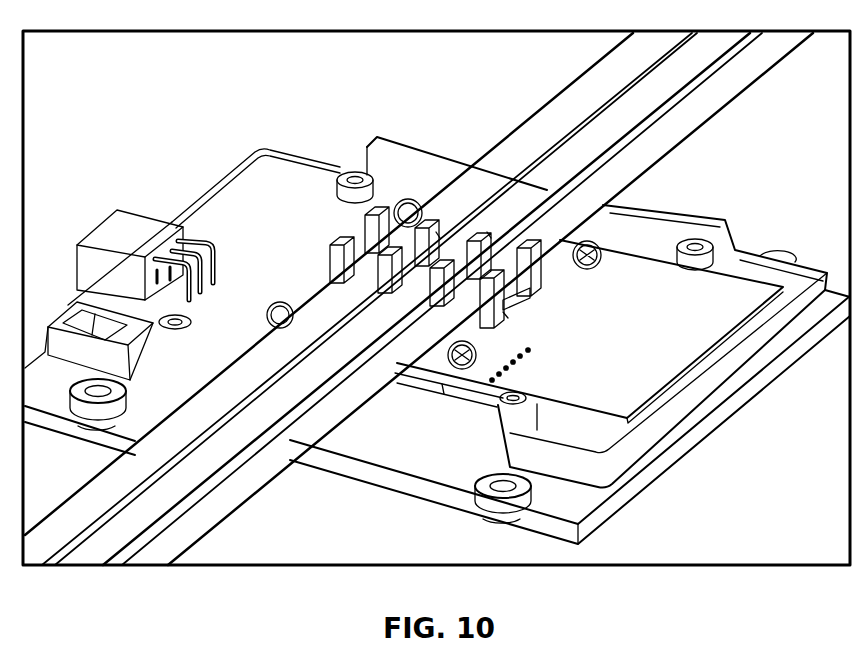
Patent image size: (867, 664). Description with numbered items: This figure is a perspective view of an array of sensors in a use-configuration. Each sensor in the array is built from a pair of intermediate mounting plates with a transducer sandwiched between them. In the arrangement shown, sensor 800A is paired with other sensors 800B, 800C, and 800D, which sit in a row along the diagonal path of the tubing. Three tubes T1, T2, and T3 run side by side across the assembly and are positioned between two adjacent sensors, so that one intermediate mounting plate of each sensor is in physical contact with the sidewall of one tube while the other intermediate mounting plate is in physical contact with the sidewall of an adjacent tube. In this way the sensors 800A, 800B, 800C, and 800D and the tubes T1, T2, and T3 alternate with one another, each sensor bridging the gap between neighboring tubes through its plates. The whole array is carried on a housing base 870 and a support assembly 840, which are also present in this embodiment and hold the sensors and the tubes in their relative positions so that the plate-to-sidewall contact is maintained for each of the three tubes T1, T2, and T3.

The sensor 800A is at (357, 231).
The sensor 800B is at (413, 277).
The sensor 800C is at (465, 285).
The sensor 800D is at (535, 268).
The housing base 870 is at (530, 242).
The support assembly 840 is at (746, 307).
The tube T1 is at (583, 107).
The tube T2 is at (620, 118).
The tube T3 is at (722, 112).